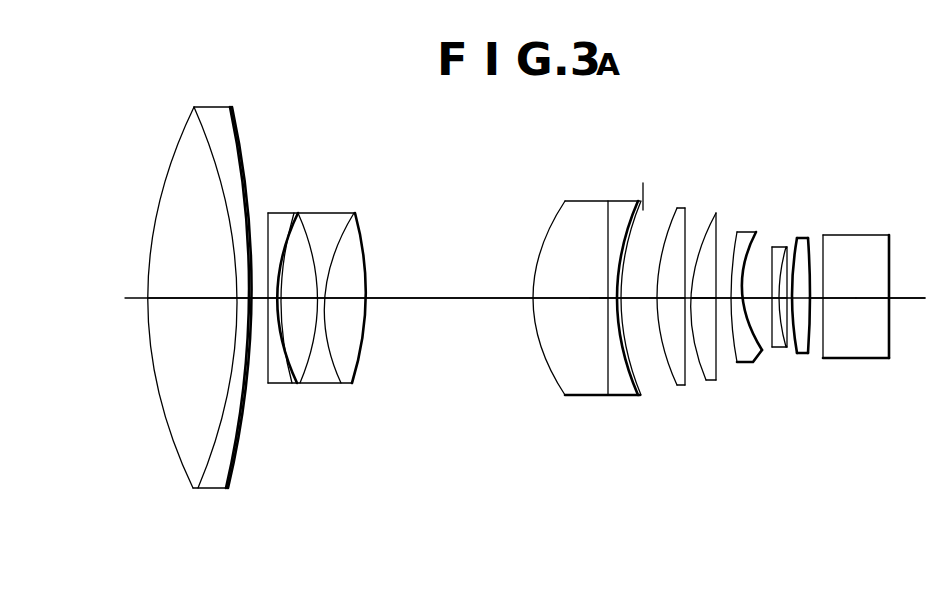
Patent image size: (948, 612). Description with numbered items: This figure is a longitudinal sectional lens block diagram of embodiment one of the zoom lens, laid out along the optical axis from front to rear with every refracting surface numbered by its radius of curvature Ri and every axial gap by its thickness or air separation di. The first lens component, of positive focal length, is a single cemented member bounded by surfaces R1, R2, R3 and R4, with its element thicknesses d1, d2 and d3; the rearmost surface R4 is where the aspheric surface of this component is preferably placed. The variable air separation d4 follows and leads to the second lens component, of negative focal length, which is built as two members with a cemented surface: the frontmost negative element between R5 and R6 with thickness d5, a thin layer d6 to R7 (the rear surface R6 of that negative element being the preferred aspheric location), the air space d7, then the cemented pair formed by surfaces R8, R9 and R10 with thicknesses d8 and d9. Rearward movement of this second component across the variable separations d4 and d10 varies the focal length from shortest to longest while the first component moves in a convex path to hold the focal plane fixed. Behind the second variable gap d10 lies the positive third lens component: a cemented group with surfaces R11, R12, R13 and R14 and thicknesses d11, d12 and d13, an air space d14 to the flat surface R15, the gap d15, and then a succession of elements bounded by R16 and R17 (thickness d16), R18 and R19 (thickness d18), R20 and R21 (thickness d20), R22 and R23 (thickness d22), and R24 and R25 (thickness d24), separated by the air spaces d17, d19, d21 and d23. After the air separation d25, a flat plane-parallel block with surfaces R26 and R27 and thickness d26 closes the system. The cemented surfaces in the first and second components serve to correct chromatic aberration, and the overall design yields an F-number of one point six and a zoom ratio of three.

The radius of curvature of the first surface R1 is at (186, 479).
The radius of curvature of the second surface R2 is at (198, 490).
The radius of curvature of the third surface R3 is at (229, 490).
The radius of curvature of the fourth surface R4 is at (236, 478).
The radius of curvature of the fifth surface R5 is at (266, 386).
The radius of curvature of the sixth surface R6 is at (288, 386).
The radius of curvature of the seventh surface R7 is at (297, 385).
The radius of curvature of the eighth surface R8 is at (303, 381).
The radius of curvature of the ninth surface R9 is at (341, 384).
The radius of curvature of the tenth surface R10 is at (355, 381).
The radius of curvature of the eleventh surface R11 is at (548, 371).
The radius of curvature of the twelfth surface R12 is at (607, 397).
The radius of curvature of the thirteenth surface R13 is at (637, 397).
The radius of curvature of the fourteenth surface R14 is at (643, 380).
The radius of curvature of the fifteenth surface R15 is at (676, 386).
The radius of curvature of the sixteenth surface R16 is at (685, 386).
The radius of curvature of the seventeenth surface R17 is at (707, 379).
The radius of curvature of the eighteenth surface R18 is at (716, 379).
The radius of curvature of the nineteenth surface R19 is at (739, 363).
The radius of curvature of the twentieth surface R20 is at (762, 357).
The radius of curvature of the twenty-first surface R21 is at (774, 348).
The radius of curvature of the twenty-second surface R22 is at (789, 348).
The radius of curvature of the twenty-third surface R23 is at (798, 354).
The radius of curvature of the twenty-fourth surface R24 is at (810, 340).
The radius of curvature of the twenty-fifth surface R25 is at (824, 357).
The radius of curvature of the twenty-sixth surface R26 is at (824, 344).
The radius of curvature of the twenty-seventh surface R27 is at (890, 344).
The axial thickness between the first and second surfaces d1 is at (165, 300).
The axial thickness between the second and third surfaces d2 is at (245, 297).
The axial thickness between the third and fourth surfaces d3 is at (251, 302).
The variable axial air separation between the fourth and fifth surfaces d4 is at (253, 288).
The axial thickness between the fifth and sixth surfaces d5 is at (273, 290).
The axial thickness between the sixth and seventh surfaces d6 is at (280, 296).
The axial air separation between the seventh and eighth surfaces d7 is at (300, 300).
The axial thickness between the eighth and ninth surfaces d8 is at (320, 302).
The axial thickness between the ninth and tenth surfaces d9 is at (346, 300).
The variable axial air separation between the tenth and eleventh surfaces d10 is at (431, 300).
The axial thickness between the eleventh and twelfth surfaces d11 is at (553, 300).
The axial thickness between the twelfth and thirteenth surfaces d12 is at (608, 297).
The axial thickness between the thirteenth and fourteenth surfaces d13 is at (612, 301).
The axial air separation between the fourteenth and fifteenth surfaces d14 is at (631, 297).
The axial air separation between the fifteenth and sixteenth surfaces d15 is at (644, 300).
The axial thickness between the sixteenth and seventeenth surfaces d16 is at (670, 300).
The axial air separation between the seventeenth and eighteenth surfaces d17 is at (694, 297).
The axial thickness between the eighteenth and nineteenth surfaces d18 is at (698, 300).
The axial air separation between the nineteenth and twentieth surfaces d19 is at (723, 296).
The axial thickness between the twentieth and twenty-first surfaces d20 is at (735, 296).
The axial air separation between the twenty-first and twenty-second surfaces d21 is at (768, 296).
The axial thickness between the twenty-second and twenty-third surfaces d22 is at (784, 297).
The axial air separation between the twenty-third and twenty-fourth surfaces d23 is at (788, 300).
The axial thickness between the twenty-fourth and twenty-fifth surfaces d24 is at (813, 296).
The axial air separation between the twenty-fifth and twenty-sixth surfaces d25 is at (826, 296).
The axial thickness between the twenty-sixth and twenty-seventh surfaces d26 is at (855, 297).